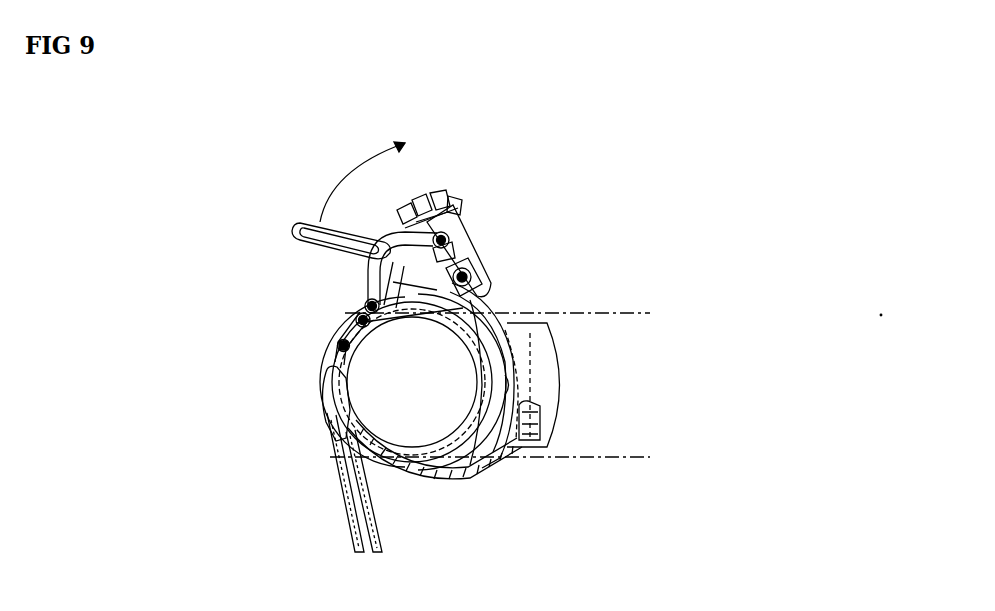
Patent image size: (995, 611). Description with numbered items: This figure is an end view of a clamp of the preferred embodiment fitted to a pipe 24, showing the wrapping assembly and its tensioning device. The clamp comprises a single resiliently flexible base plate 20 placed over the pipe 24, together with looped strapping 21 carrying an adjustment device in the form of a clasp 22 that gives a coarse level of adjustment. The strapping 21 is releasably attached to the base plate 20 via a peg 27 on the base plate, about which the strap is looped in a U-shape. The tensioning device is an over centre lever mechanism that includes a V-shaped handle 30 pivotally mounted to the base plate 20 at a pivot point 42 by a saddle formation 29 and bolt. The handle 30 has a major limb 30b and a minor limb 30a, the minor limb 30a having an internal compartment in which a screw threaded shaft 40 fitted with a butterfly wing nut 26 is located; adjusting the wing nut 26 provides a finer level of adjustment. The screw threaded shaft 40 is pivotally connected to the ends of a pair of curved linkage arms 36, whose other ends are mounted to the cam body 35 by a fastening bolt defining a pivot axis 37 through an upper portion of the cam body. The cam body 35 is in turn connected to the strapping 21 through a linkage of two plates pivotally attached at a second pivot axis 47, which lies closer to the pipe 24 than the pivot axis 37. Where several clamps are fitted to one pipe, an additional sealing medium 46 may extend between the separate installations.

The base plate 20 is at (508, 318).
The looped straps 21 is at (350, 524).
The clasp 22 is at (335, 402).
The pipe 24 is at (485, 472).
The butterfly wing nut 26 is at (444, 196).
The peg 27 is at (540, 418).
The saddle formation 29 is at (487, 290).
The handle 30 is at (470, 242).
The minor limb 30a is at (479, 262).
The major limb 30b is at (310, 228).
The cam body 35 is at (356, 317).
The linkage arms 36 is at (382, 270).
The pivot axis 37 is at (365, 306).
The screw threaded shaft 40 is at (417, 203).
The pivot point 42 is at (485, 275).
The additional sealing medium 46 is at (553, 392).
The pivot axis 47 is at (340, 343).